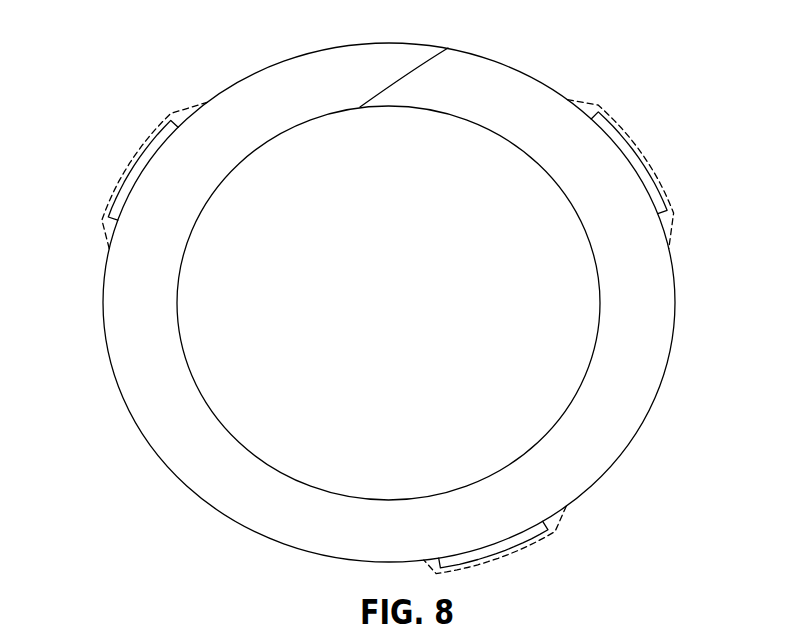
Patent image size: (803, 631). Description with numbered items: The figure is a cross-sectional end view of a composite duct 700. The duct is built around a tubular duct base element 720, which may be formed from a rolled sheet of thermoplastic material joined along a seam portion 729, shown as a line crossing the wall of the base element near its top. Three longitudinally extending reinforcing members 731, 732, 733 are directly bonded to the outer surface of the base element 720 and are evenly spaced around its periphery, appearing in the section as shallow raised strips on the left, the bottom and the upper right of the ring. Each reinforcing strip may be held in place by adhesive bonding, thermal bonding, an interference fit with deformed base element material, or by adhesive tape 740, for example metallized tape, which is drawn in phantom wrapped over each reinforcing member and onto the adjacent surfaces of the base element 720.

The composite duct 700 is at (128, 76).
The tubular duct base element 720 is at (657, 257).
The seam portion 729 is at (448, 36).
The reinforcing member 731 is at (130, 178).
The reinforcing member 732 is at (493, 550).
The reinforcing member 733 is at (633, 160).
The adhesive tape 740 is at (108, 250).